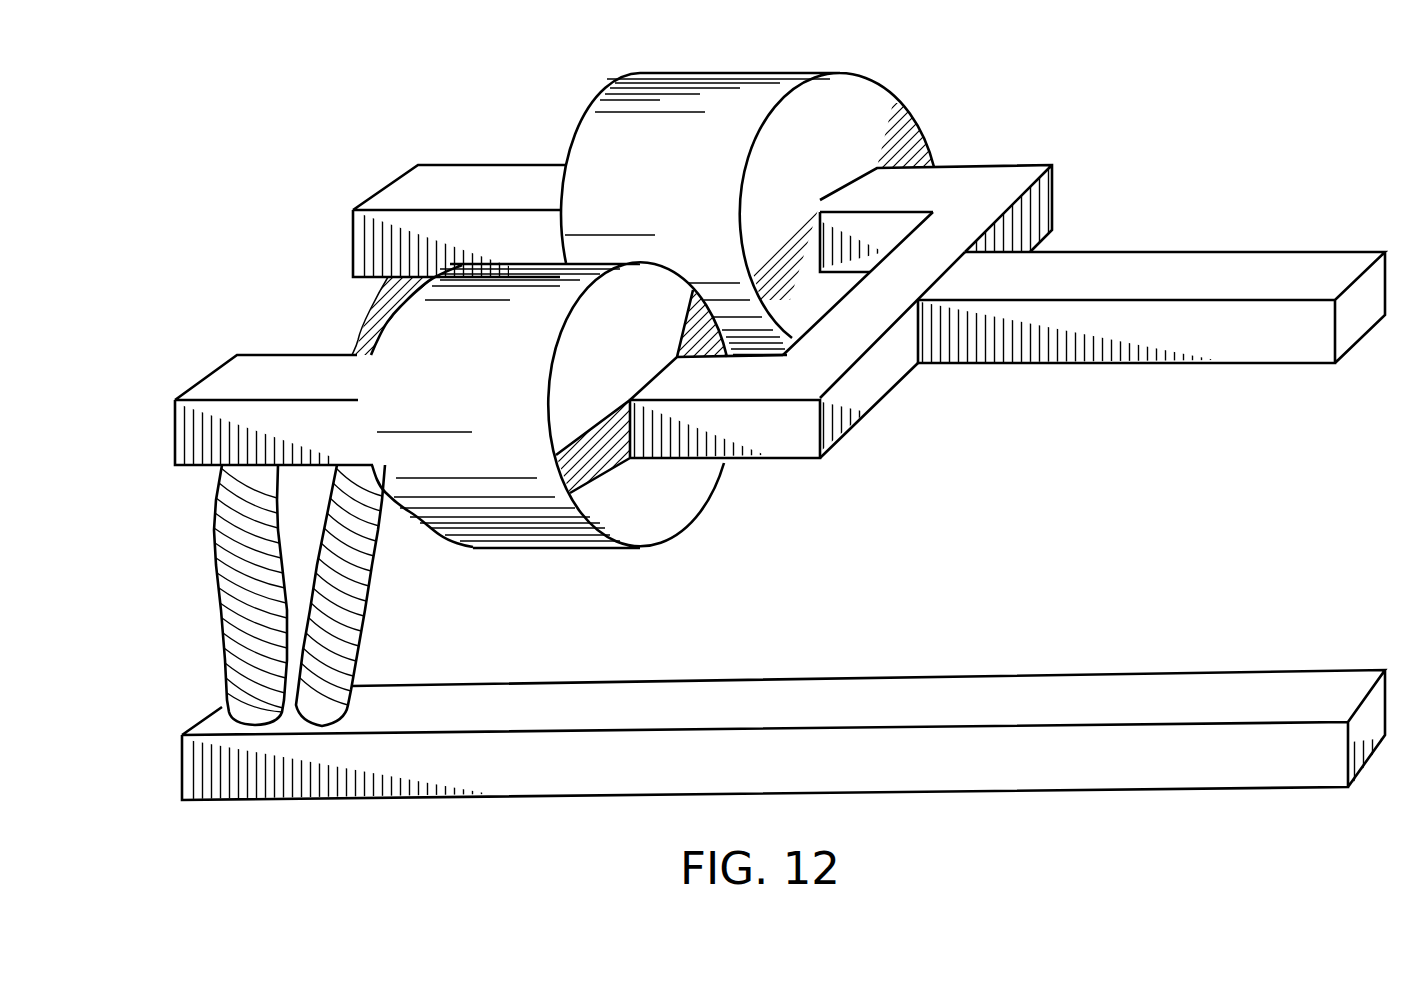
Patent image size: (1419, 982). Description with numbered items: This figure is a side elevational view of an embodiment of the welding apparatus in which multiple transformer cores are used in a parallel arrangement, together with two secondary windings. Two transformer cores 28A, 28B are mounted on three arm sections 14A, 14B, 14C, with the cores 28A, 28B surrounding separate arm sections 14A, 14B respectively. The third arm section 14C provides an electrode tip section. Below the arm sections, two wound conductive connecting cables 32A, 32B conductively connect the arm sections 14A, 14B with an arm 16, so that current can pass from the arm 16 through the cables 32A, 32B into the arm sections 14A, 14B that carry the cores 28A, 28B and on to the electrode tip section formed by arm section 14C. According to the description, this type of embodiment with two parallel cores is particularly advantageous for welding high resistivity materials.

The arm section 14A is at (746, 185).
The arm section 14B is at (570, 388).
The arm section 14C is at (1151, 266).
The arm 16 is at (783, 700).
The transformer core 28A is at (753, 183).
The transformer core 28B is at (548, 454).
The wound conductive connecting cable 32A is at (404, 595).
The wound conductive connecting cable 32B is at (193, 595).